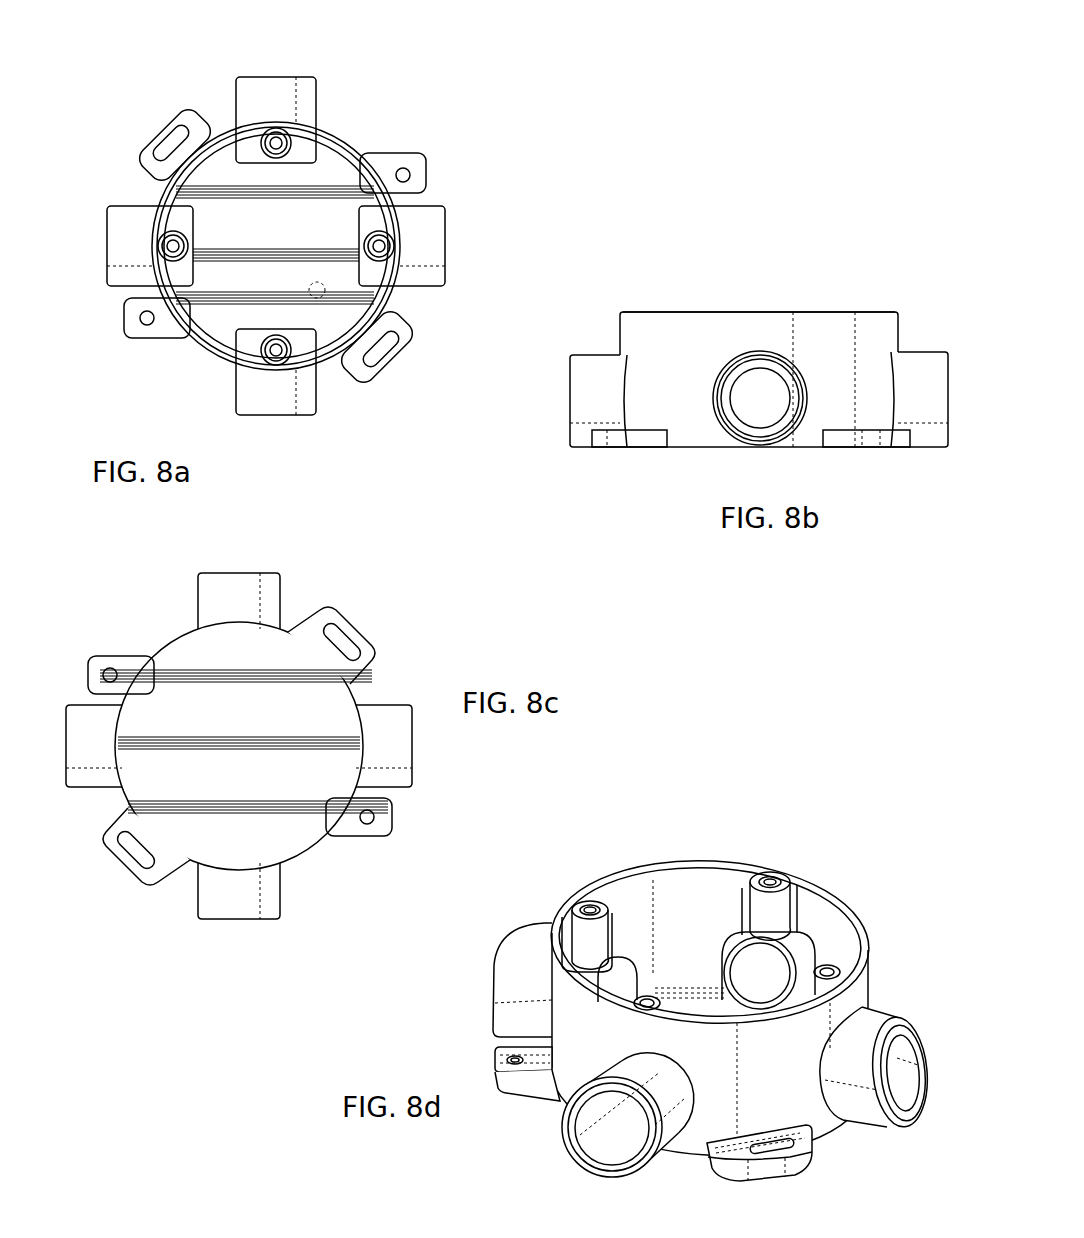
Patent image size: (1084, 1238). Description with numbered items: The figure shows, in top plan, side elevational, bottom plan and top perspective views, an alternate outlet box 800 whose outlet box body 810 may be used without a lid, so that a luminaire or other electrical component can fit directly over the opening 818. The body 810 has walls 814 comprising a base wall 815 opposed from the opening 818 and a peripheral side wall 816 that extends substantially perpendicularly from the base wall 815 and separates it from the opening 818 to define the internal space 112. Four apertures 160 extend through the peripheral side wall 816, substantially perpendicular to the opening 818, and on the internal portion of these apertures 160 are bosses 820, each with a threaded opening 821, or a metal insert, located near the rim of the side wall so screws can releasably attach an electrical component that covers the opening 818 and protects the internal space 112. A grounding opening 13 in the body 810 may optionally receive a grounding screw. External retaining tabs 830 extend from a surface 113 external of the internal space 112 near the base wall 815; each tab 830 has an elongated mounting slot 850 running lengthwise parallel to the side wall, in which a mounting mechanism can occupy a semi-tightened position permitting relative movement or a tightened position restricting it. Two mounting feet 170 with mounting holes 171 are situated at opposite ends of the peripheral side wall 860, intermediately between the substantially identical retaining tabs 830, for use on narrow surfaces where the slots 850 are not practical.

In FIG. 8a, the alternate outlet box 800 is at (510, 177).
In FIG. 8a, the outlet box body 810 is at (500, 212).
In FIG. 8a, the internal space 112 is at (306, 197).
In FIG. 8d, the internal space 112 is at (698, 885).
In FIG. 8d, the surface 113 is at (877, 982).
In FIG. 8a, the grounding opening 13 is at (328, 293).
In FIG. 8a, the apertures 160 is at (270, 66).
In FIG. 8b, the apertures 160 is at (560, 402).
In FIG. 8a, the mounting feet 170 is at (410, 146).
In FIG. 8b, the mounting feet 170 is at (612, 449).
In FIG. 8c, the mounting feet 170 is at (365, 845).
In FIG. 8d, the mounting feet 170 is at (500, 1106).
In FIG. 8a, the mounting holes 171 is at (413, 172).
In FIG. 8c, the mounting holes 171 is at (383, 812).
In FIG. 8d, the mounting holes 171 is at (517, 1058).
In FIG. 8b, the walls 814 is at (605, 338).
In FIG. 8b, the base wall 815 is at (687, 461).
In FIG. 8c, the base wall 815 is at (291, 692).
In FIG. 8d, the peripheral side wall 816 is at (873, 920).
In FIG. 8a, the opening 818 is at (235, 293).
In FIG. 8b, the opening 818 is at (817, 310).
In FIG. 8c, the opening 818 is at (244, 741).
In FIG. 8a, the bosses 820 is at (284, 130).
In FIG. 8d, the bosses 820 is at (585, 890).
In FIG. 8a, the threaded openings 821 is at (266, 139).
In FIG. 8d, the threaded openings 821 is at (787, 873).
In FIG. 8a, the external retaining tabs 830 is at (145, 127).
In FIG. 8b, the external retaining tabs 830 is at (888, 450).
In FIG. 8c, the external retaining tabs 830 is at (378, 628).
In FIG. 8d, the external retaining tabs 830 is at (722, 1182).
In FIG. 8c, the elongated mounting slot 850 is at (141, 866).
In FIG. 8d, the elongated mounting slot 850 is at (786, 1154).
In FIG. 8a, the peripheral side wall 860 is at (268, 424).
In FIG. 8c, the peripheral side wall 860 is at (227, 565).
In FIG. 8d, the peripheral side wall 860 is at (496, 950).